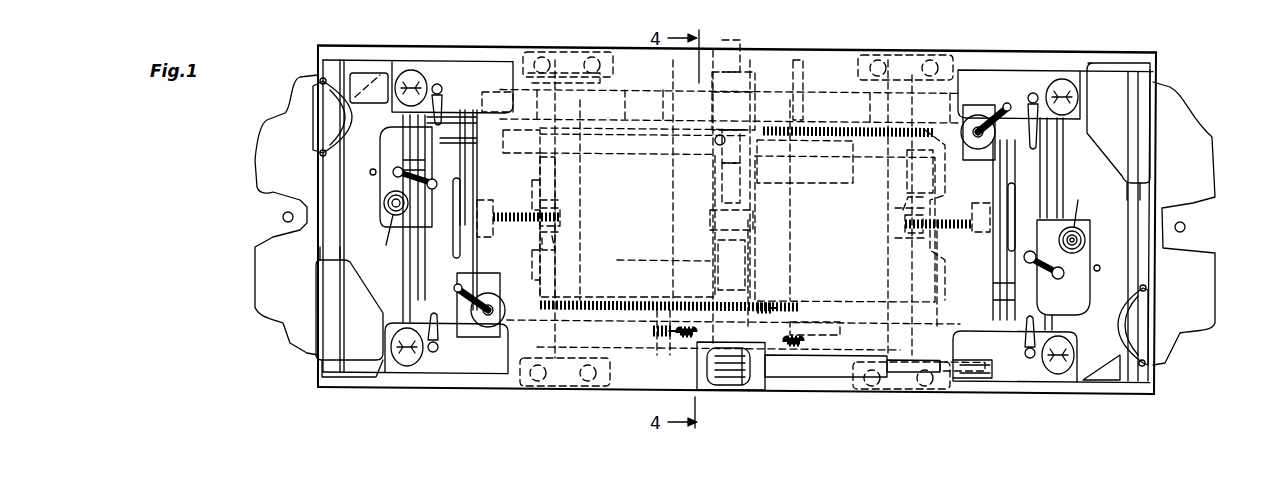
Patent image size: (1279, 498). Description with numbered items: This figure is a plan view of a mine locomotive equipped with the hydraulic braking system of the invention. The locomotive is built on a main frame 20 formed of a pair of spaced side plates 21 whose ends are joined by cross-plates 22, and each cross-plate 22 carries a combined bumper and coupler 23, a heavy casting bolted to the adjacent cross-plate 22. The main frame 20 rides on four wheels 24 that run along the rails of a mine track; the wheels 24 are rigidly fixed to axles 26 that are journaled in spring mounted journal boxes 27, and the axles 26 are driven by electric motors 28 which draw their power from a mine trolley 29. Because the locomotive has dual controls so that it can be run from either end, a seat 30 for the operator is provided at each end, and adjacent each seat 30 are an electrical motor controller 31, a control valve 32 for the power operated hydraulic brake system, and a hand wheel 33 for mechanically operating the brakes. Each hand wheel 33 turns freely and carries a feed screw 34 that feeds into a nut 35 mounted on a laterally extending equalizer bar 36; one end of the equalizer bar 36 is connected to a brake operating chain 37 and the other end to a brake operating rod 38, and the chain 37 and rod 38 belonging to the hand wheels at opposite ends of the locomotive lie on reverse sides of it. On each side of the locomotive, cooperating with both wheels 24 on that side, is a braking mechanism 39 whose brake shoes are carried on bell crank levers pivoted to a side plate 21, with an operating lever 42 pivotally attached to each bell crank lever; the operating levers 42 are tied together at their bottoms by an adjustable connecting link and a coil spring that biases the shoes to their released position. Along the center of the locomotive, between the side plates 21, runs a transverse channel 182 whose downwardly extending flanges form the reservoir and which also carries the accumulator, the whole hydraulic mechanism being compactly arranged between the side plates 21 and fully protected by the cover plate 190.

The main frame 20 is at (856, 396).
The side plate 21 is at (1002, 63).
The cross-plate 22 is at (334, 224).
The combined bumper and coupler 23 is at (280, 136).
The wheel 24 is at (730, 204).
The axle 26 is at (570, 193).
The journal box 27 is at (587, 62).
The electric motor 28 is at (720, 207).
The mine trolley 29 is at (815, 368).
The seat 30 is at (731, 221).
The electrical motor controller 31 is at (735, 228).
The control valve 32 is at (507, 294).
The hand wheel 33 is at (460, 187).
The feed screw 34 is at (511, 215).
The nut 35 is at (556, 228).
The equalizer bar 36 is at (552, 243).
The brake operating chain 37 is at (632, 303).
The brake operating rod 38 is at (788, 313).
The braking mechanism 39 is at (733, 322).
The operating lever 42 is at (840, 335).
The transverse channel 182 is at (757, 215).
The cover plate 190 is at (823, 83).